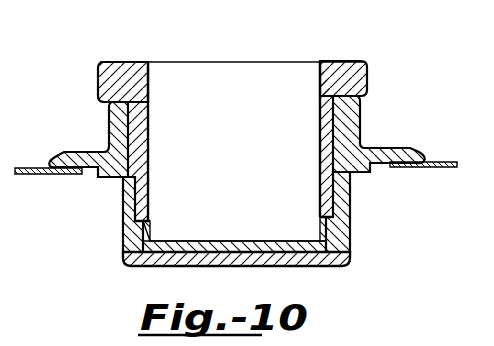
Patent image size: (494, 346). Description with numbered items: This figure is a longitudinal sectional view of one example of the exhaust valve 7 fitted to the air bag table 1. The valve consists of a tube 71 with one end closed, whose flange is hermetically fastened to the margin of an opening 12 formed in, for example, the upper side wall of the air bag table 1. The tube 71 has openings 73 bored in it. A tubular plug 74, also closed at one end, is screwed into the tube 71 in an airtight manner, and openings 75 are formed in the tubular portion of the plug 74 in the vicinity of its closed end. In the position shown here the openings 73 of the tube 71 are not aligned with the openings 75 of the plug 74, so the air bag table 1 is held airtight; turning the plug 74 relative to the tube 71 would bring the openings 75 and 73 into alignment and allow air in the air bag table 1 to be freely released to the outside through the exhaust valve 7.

The exhaust valve 7 is at (349, 70).
The tubular plug 74 is at (361, 80).
The tube 71 is at (380, 150).
The openings 73 is at (365, 192).
The openings 75 is at (364, 238).
The opening 12 is at (80, 172).
The air bag table 1 is at (446, 166).